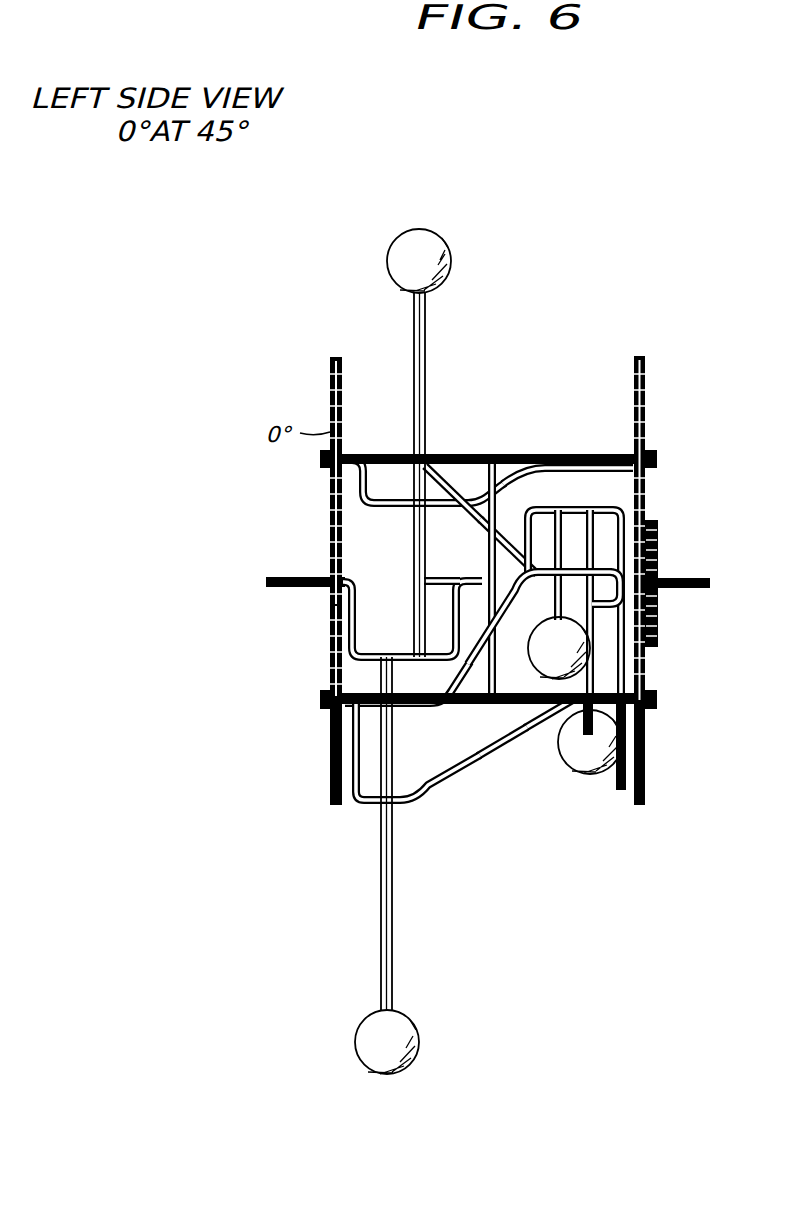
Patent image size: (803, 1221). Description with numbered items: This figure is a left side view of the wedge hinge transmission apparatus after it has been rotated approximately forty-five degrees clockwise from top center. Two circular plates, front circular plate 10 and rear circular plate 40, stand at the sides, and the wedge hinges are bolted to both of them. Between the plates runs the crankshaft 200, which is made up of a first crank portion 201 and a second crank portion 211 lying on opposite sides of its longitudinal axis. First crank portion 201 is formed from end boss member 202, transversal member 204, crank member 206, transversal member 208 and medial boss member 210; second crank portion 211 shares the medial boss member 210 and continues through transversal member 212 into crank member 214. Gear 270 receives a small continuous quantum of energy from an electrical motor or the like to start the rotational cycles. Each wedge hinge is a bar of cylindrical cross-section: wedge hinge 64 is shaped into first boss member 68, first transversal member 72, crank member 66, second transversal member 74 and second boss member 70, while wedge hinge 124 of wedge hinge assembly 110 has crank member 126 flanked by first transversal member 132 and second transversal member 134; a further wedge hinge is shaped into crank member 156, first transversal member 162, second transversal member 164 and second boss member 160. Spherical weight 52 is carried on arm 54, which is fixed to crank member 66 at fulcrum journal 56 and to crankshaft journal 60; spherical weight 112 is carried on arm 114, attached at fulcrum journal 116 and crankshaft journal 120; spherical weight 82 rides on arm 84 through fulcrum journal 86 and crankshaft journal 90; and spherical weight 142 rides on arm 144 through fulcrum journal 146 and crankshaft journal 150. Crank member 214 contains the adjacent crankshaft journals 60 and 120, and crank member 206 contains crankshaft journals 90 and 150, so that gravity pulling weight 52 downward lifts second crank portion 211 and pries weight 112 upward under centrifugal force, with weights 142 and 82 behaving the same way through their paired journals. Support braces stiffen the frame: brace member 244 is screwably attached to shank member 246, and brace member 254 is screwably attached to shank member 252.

The front circular plate 10 is at (645, 388).
The rear circular plate 40 is at (278, 372).
The spherical weight 52 is at (437, 240).
The arm 54 is at (427, 370).
The fulcrum journal 56 is at (401, 548).
The crankshaft journal 60 is at (426, 679).
The wedge hinge 64 is at (318, 524).
The crank member 66 is at (386, 522).
The first boss member 68 is at (357, 452).
The second boss member 70 is at (593, 452).
The first transversal member 72 is at (316, 500).
The second transversal member 74 is at (463, 432).
The spherical weight 82 is at (597, 773).
The arm 84 is at (592, 657).
The fulcrum journal 86 is at (644, 612).
The crankshaft journal 90 is at (597, 507).
The wedge hinge assembly 110 is at (350, 938).
The spherical weight 112 is at (325, 1088).
The arm 114 is at (393, 950).
The fulcrum journal 116 is at (398, 805).
The crankshaft journal 120 is at (403, 632).
The wedge hinge 124 is at (492, 762).
The crank member 126 is at (326, 840).
The first transversal member 132 is at (318, 785).
The second transversal member 134 is at (440, 795).
The spherical weight 142 is at (627, 722).
The arm 144 is at (543, 605).
The fulcrum journal 146 is at (627, 515).
The crankshaft journal 150 is at (543, 484).
The crank member 156 is at (630, 530).
The second boss member 160 is at (410, 708).
The first transversal member 162 is at (630, 686).
The second transversal member 164 is at (499, 682).
The crankshaft 200 is at (242, 606).
The first crank portion 201 is at (563, 487).
The end boss member 202 is at (658, 555).
The transversal member 204 is at (658, 533).
The crank member 206 is at (627, 487).
The transversal member 208 is at (472, 523).
The medial boss member 210 is at (472, 548).
The second crank portion 211 is at (405, 594).
The transversal member 212 is at (412, 571).
The crank member 214 is at (308, 667).
The brace member 244 is at (485, 452).
The shank member 246 is at (394, 452).
The shank member 252 is at (540, 786).
The brace member 254 is at (468, 746).
The gear 270 is at (657, 627).